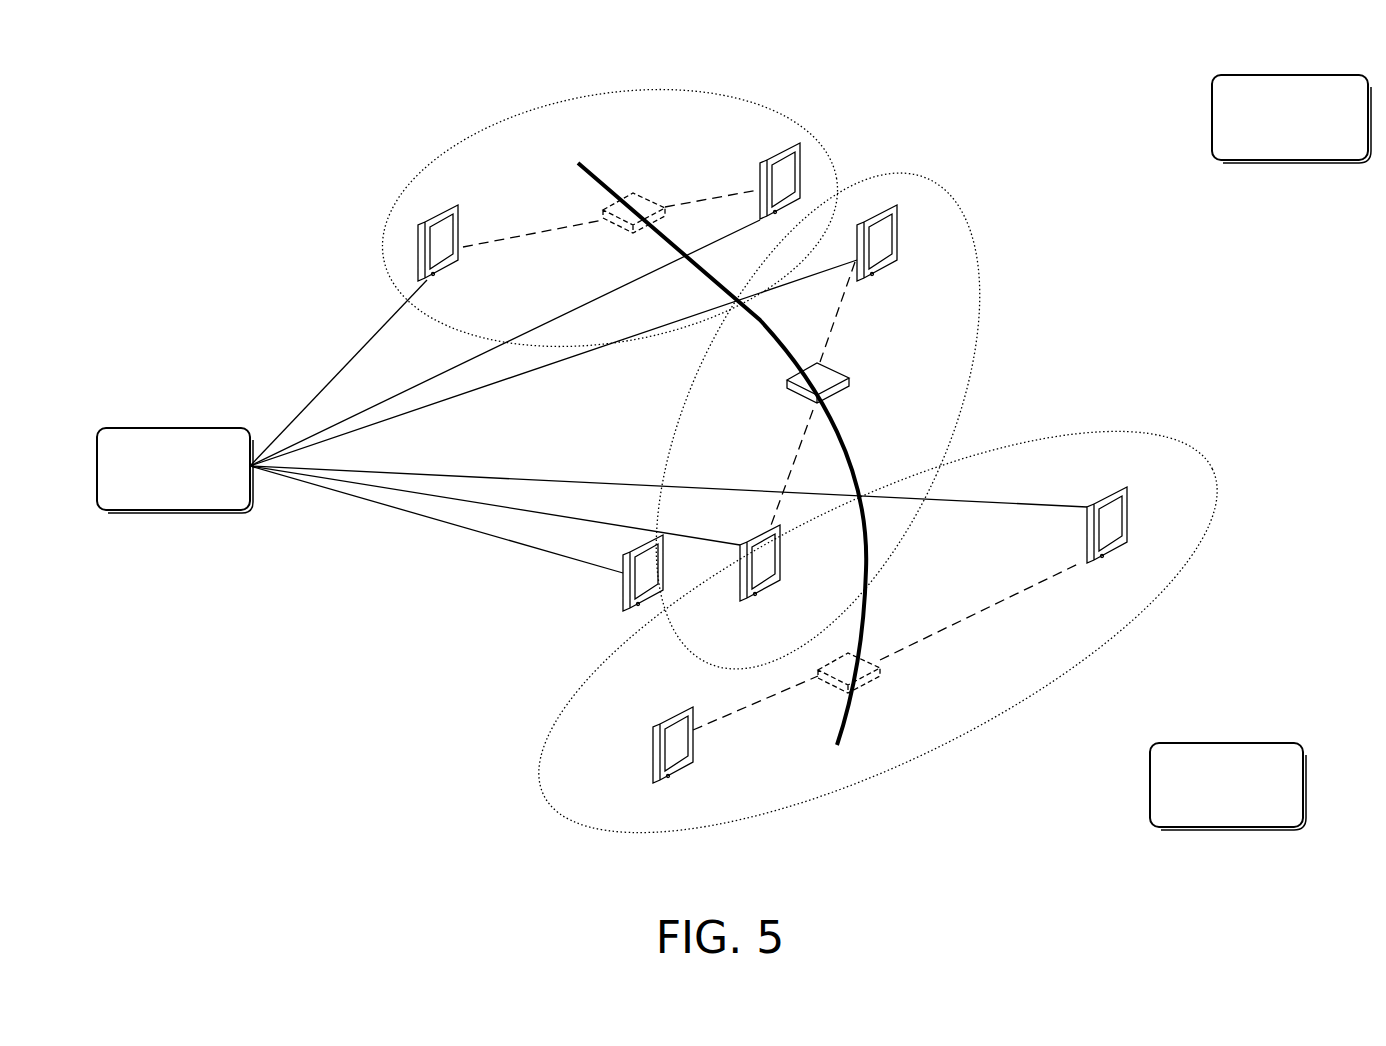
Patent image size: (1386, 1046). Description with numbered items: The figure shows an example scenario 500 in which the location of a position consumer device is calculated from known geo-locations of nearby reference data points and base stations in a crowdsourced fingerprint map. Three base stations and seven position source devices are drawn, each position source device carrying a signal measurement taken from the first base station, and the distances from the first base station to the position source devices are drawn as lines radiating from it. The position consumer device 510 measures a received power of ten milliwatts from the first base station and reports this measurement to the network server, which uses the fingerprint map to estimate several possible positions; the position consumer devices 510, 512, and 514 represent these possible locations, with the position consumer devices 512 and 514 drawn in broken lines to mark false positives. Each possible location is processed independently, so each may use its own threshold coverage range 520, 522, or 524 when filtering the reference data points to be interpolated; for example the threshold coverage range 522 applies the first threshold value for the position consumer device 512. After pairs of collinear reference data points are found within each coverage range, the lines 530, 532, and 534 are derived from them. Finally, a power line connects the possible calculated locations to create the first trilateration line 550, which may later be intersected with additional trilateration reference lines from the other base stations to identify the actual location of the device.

The example scenario 500 is at (108, 948).
The position consumer device 510 is at (837, 372).
The position consumer device 512 is at (607, 212).
The position consumer device 514 is at (882, 665).
The threshold coverage range 520 is at (977, 350).
The threshold coverage range 522 is at (717, 90).
The threshold coverage range 524 is at (1218, 508).
The line 530 is at (812, 395).
The line 532 is at (610, 218).
The line 534 is at (886, 646).
The first trilateration line 550 is at (578, 163).